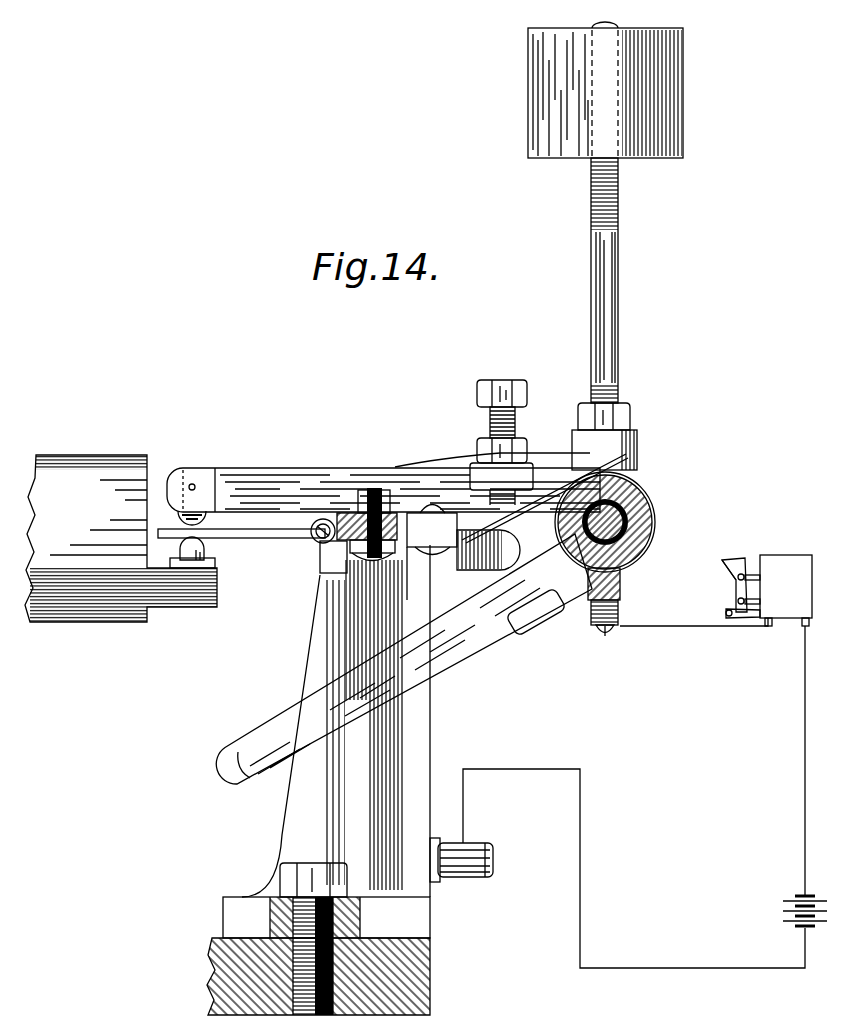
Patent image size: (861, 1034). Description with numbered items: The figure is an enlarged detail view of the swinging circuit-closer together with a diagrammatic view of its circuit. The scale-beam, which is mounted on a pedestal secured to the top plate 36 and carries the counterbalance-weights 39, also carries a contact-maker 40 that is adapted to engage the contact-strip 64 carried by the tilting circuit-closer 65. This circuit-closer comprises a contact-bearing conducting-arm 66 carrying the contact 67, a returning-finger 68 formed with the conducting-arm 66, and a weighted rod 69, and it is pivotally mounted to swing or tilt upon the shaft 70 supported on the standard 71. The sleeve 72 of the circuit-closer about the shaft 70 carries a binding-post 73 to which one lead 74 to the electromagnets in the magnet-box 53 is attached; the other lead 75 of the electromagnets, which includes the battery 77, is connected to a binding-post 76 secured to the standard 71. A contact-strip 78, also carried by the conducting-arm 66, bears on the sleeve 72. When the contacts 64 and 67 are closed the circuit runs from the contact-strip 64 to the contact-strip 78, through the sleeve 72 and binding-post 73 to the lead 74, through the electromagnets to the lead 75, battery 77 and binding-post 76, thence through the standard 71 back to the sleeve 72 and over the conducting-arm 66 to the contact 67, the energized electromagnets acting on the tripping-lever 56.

The top plate 36 is at (418, 965).
The counterbalance-weights 39 is at (121, 538).
The contact-maker 40 is at (205, 549).
The magnet-box 53 is at (772, 565).
The tripping-lever 56 is at (738, 562).
The contact-strip 64 is at (258, 540).
The tilting circuit-closer 65 is at (511, 490).
The conducting-arm 66 is at (280, 480).
The contact 67 is at (216, 517).
The returning-finger 68 is at (404, 657).
The weighted rod 69 is at (618, 275).
The shaft 70 is at (640, 488).
The standard 71 is at (349, 692).
The sleeve 72 is at (650, 513).
The binding-post 73 is at (623, 583).
The lead 74 is at (668, 627).
The lead 75 is at (580, 846).
The binding-post 76 is at (476, 850).
The battery 77 is at (790, 913).
The contact-strip 78 is at (550, 503).